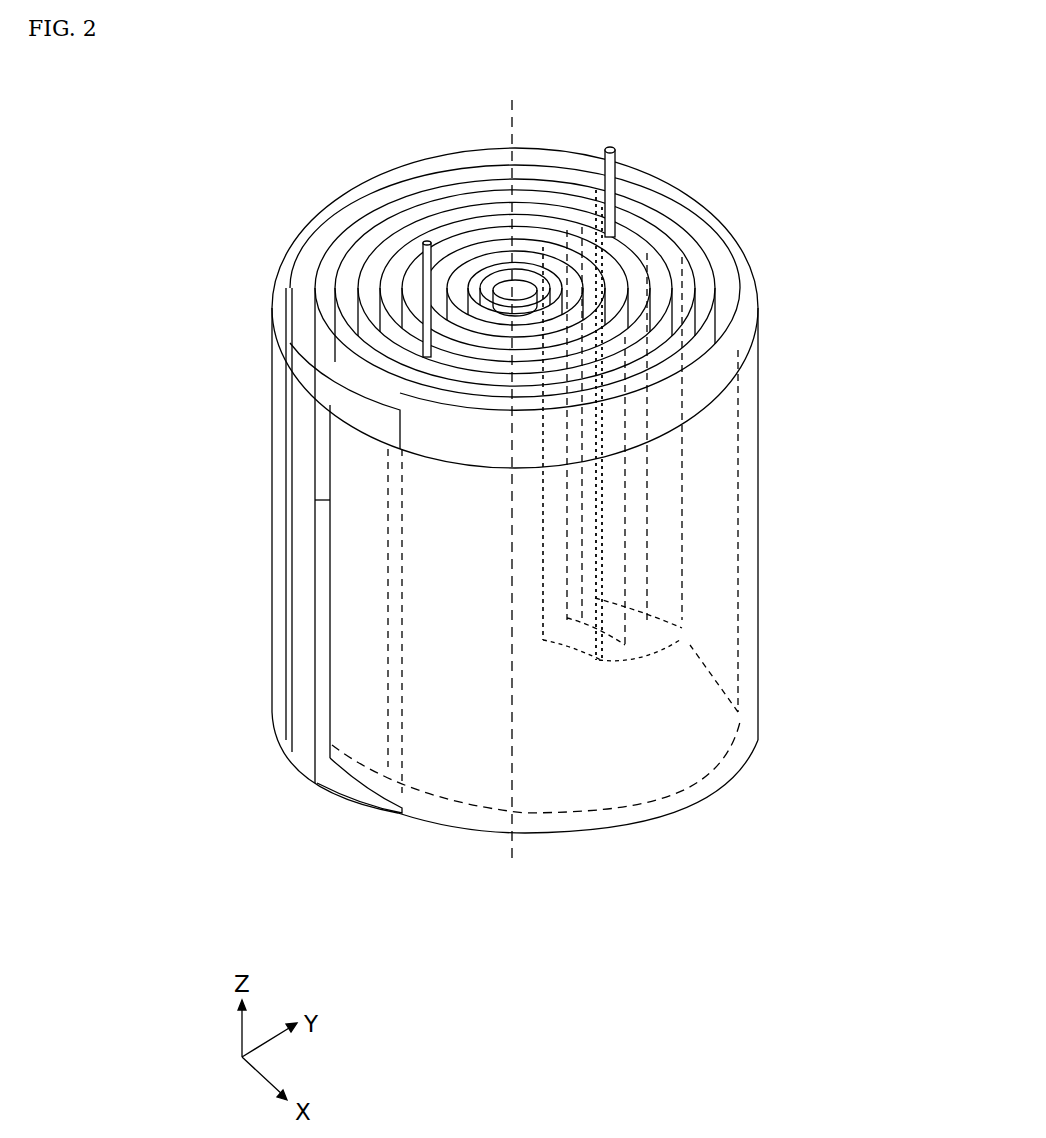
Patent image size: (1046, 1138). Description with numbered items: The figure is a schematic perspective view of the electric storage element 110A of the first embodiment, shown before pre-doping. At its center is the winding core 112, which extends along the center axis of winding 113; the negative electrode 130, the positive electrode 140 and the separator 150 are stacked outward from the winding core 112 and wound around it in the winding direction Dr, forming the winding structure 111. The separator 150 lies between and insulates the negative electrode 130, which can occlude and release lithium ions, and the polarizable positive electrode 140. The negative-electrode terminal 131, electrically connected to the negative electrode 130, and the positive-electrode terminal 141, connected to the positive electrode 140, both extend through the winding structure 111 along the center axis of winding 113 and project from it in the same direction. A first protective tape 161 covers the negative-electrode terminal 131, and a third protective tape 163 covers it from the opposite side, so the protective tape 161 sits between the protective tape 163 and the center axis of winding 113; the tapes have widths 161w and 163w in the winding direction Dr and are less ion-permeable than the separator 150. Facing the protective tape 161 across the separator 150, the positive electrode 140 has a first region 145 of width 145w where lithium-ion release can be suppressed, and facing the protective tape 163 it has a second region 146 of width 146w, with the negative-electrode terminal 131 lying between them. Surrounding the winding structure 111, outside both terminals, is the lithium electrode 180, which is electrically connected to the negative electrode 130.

The electric storage element 110A is at (750, 163).
The winding structure 111 is at (153, 322).
The winding core 112 is at (508, 287).
The center axis of winding 113 is at (512, 100).
The negative electrode 130 is at (322, 500).
The negative-electrode terminal 131 is at (613, 200).
The positive electrode 140 is at (330, 409).
The positive-electrode terminal 141 is at (420, 283).
The first region 145 is at (580, 660).
The width of the first region 145w is at (567, 640).
The second region 146 is at (745, 700).
The width of the second region 146w is at (598, 427).
The separator 150 is at (285, 368).
The protective tape 161 is at (623, 600).
The width of the protective tape 161w is at (607, 640).
The protective tape 163 is at (662, 665).
The width of the protective tape 163w is at (633, 498).
The lithium electrode 180 is at (760, 453).
The winding direction Dr is at (308, 177).